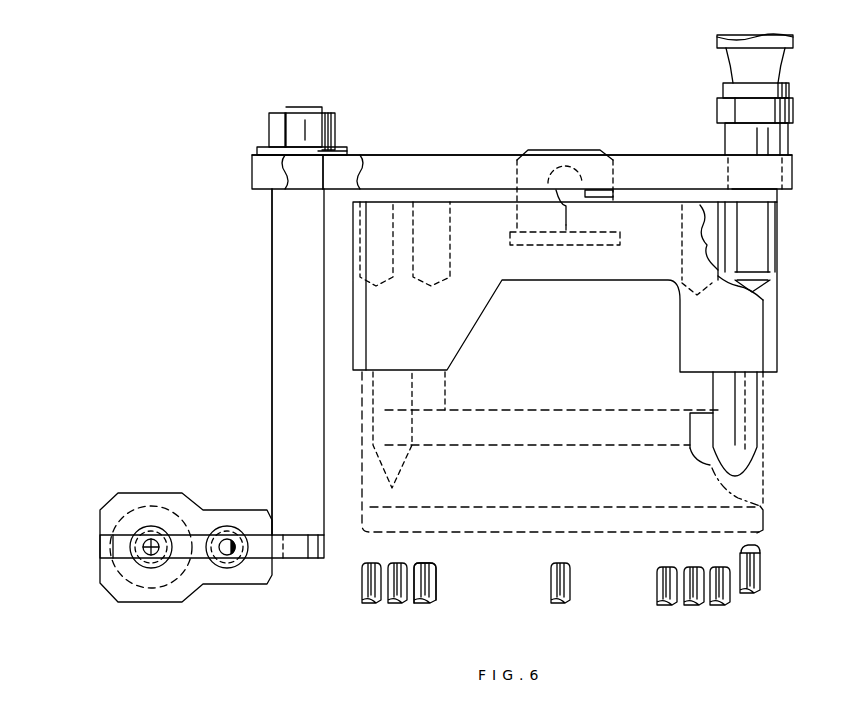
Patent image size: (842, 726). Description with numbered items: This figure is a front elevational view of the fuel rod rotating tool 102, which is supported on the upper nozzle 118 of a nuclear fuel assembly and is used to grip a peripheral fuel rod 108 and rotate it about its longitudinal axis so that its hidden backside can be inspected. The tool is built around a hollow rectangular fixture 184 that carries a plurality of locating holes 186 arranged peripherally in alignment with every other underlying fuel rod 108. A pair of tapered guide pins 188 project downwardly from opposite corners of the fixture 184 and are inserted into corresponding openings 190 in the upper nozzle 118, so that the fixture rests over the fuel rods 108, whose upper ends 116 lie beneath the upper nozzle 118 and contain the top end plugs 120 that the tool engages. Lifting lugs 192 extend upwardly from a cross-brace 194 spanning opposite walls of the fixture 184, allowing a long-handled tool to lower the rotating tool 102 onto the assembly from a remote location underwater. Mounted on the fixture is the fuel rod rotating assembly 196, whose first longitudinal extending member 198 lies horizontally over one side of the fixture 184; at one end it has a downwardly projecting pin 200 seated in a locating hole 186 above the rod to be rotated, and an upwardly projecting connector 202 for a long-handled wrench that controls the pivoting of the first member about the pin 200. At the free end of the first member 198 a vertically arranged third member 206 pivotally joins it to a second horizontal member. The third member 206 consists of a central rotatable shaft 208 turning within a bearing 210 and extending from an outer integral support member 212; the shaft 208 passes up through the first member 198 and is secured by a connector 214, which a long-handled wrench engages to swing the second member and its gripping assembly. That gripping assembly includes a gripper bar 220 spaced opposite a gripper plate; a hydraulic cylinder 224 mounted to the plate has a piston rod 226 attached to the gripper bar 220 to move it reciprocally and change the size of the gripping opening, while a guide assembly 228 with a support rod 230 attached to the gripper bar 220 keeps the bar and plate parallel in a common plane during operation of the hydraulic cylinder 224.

The fuel rod rotating tool 102 is at (186, 187).
The fuel rod 108 is at (364, 582).
The upper end of the fuel rods 116 is at (430, 572).
The upper nozzle 118 is at (753, 493).
The top end plug 120 is at (758, 548).
The hollow rectangular fixture 184 is at (452, 342).
The locating hole 186 is at (452, 258).
The tapered guide pin 188 is at (417, 388).
The opening 190 is at (705, 458).
The lifting lug 192 is at (552, 150).
The cross-brace 194 is at (620, 240).
The fuel rod rotating assembly 196 is at (408, 153).
The first longitudinal extending member 198 is at (452, 157).
The downwardly projecting pin 200 is at (767, 243).
The upwardly projecting connector 202 is at (738, 63).
The third member 206 is at (270, 343).
The central rotatable shaft 208 is at (325, 160).
The bearing 210 is at (335, 172).
The outer integral support member 212 is at (282, 300).
The connector 214 is at (262, 127).
The gripper bar 220 is at (300, 556).
The hydraulic cylinder 224 is at (139, 492).
The piston rod 226 is at (153, 540).
The guide assembly 228 is at (224, 535).
The support rod 230 is at (224, 540).